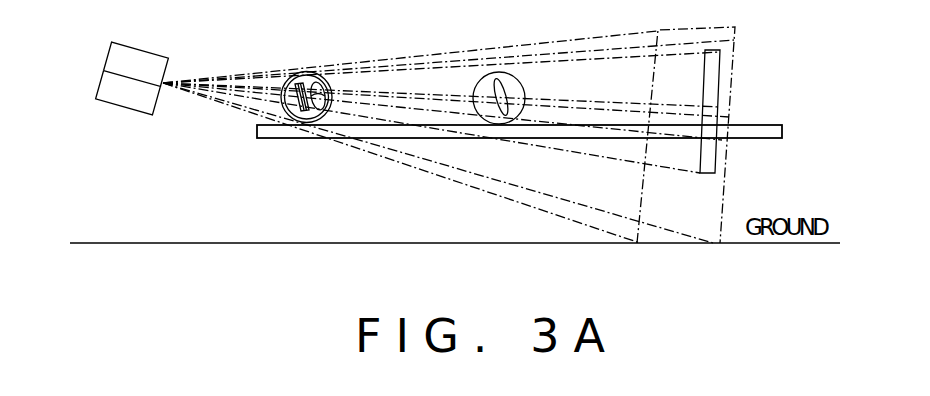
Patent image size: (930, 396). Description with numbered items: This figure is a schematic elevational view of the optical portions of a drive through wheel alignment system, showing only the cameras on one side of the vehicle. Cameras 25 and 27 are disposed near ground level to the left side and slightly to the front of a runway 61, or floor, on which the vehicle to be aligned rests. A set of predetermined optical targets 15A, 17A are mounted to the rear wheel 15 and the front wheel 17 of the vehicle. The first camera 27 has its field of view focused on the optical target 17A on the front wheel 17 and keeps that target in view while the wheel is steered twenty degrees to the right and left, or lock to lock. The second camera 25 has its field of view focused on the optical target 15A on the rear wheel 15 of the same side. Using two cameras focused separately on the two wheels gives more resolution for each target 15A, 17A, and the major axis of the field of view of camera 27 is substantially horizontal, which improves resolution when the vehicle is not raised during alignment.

The rear wheel 15 is at (515, 76).
The optical target 15A is at (507, 98).
The front wheel 17 is at (257, 113).
The optical target 17A is at (321, 74).
The camera 25 is at (128, 93).
The camera 27 is at (136, 64).
The runway 61 is at (743, 124).